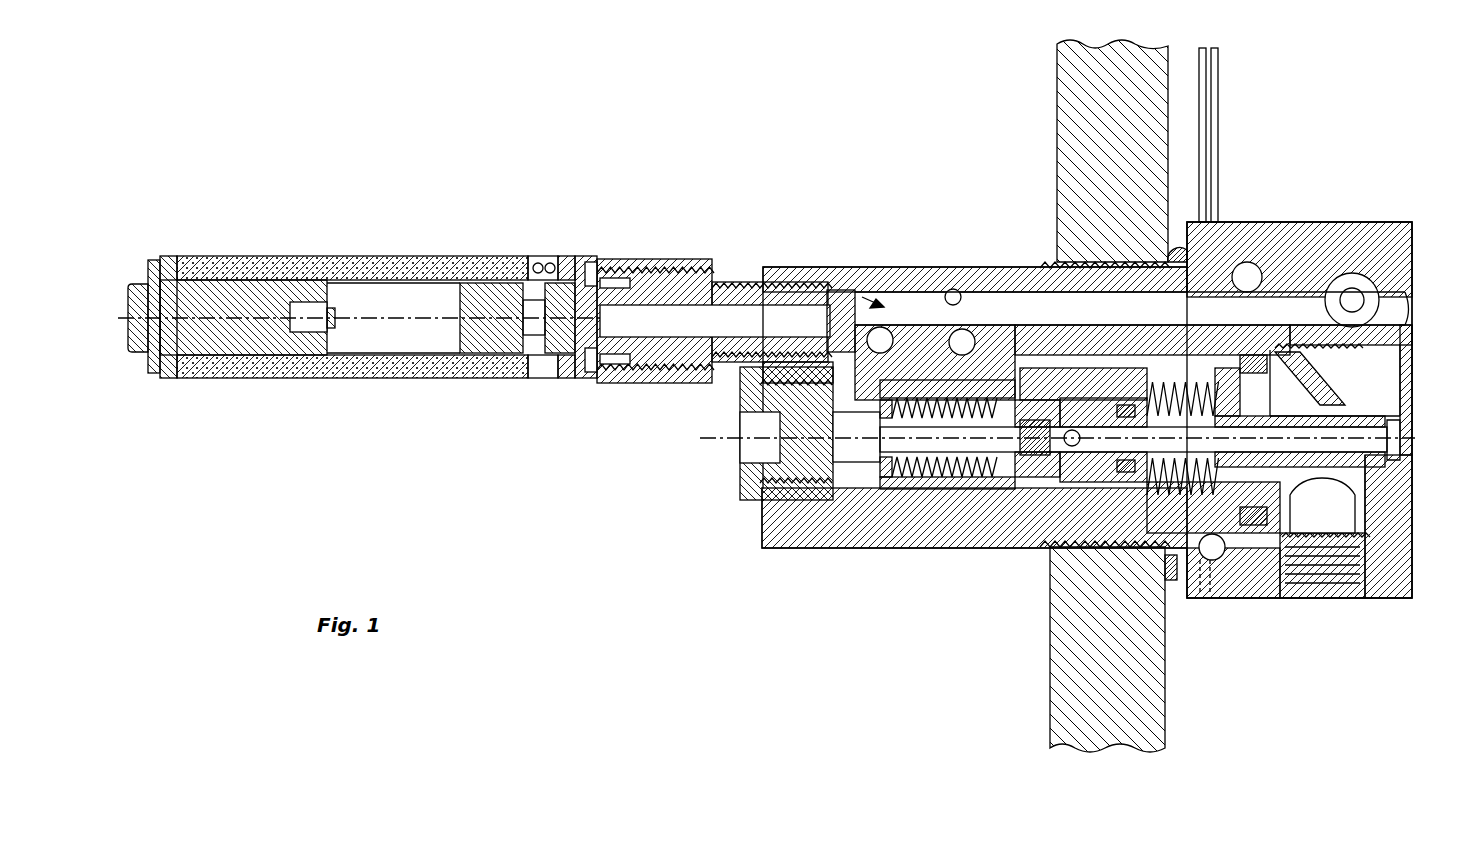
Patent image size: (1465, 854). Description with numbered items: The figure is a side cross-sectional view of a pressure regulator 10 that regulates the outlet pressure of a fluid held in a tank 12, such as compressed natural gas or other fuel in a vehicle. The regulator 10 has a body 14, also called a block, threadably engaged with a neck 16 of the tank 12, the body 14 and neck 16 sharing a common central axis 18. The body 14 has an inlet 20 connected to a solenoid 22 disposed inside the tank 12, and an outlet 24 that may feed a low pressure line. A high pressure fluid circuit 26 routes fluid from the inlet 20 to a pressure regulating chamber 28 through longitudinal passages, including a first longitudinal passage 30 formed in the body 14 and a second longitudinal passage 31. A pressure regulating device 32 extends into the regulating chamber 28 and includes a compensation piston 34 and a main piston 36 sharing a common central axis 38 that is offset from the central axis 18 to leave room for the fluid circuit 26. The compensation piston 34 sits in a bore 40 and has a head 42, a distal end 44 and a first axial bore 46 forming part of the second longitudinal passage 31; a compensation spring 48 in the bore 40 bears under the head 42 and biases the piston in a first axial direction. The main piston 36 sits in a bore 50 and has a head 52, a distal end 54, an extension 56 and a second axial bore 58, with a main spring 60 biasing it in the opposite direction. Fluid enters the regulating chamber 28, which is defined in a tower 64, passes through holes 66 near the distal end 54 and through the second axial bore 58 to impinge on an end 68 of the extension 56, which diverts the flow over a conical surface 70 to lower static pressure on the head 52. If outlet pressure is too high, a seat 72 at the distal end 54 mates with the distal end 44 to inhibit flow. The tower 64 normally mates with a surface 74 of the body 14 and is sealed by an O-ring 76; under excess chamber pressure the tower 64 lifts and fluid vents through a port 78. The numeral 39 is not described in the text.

The pressure regulator 10 is at (848, 170).
The tank 12 is at (1057, 78).
The body 14 is at (762, 525).
The neck 16 is at (1050, 633).
The central axis 18 is at (690, 438).
The inlet 20 is at (770, 266).
The solenoid 22 is at (472, 262).
The outlet 24 is at (1325, 598).
The high pressure fluid circuit 26 is at (868, 330).
The pressure regulating chamber 28 is at (1005, 475).
The first longitudinal passage 30 is at (948, 296).
The second longitudinal passage 31 is at (870, 470).
The pressure regulating device 32 is at (1020, 462).
The compensation piston 34 is at (848, 480).
The main piston 36 is at (1196, 560).
The central axis 38 is at (1313, 517).
The wall 39 is at (1352, 560).
The bore 40 is at (830, 292).
The head 42 is at (742, 478).
The distal end 44 is at (1015, 378).
The first axial bore 46 is at (898, 480).
The compensation spring 48 is at (935, 478).
The bore 50 is at (1170, 575).
The head 52 is at (1300, 390).
The distal end 54 is at (1040, 480).
The extension 56 is at (1413, 420).
The second axial bore 58 is at (1196, 395).
The main spring 60 is at (1255, 355).
The tower 64 is at (1035, 418).
The holes 66 is at (1072, 428).
The end 68 is at (1360, 400).
The conical surface 70 is at (1335, 380).
The seat 72 is at (1050, 470).
The surface 74 is at (997, 350).
The O-ring 76 is at (960, 480).
The port 78 is at (1205, 575).